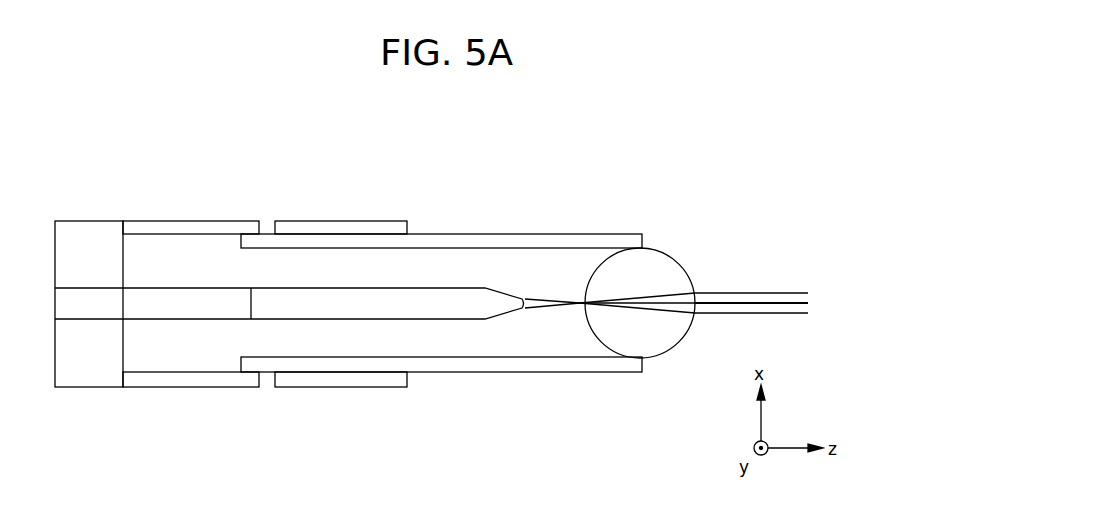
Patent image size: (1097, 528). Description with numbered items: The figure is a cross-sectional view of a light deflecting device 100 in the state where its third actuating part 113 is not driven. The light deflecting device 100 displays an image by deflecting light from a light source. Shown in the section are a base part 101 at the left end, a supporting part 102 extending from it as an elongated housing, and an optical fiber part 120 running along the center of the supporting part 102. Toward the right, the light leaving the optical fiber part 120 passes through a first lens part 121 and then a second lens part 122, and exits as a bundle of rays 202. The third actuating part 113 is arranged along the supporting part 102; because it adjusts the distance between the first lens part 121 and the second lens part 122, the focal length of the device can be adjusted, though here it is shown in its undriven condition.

The light deflecting device 100 is at (728, 172).
The base part 101 is at (82, 382).
The supporting part 102 is at (570, 236).
The third actuating part 113 is at (187, 222).
The optical fiber part 120 is at (412, 295).
The first lens part 121 is at (507, 292).
The second lens part 122 is at (678, 250).
The bundle of rays 202 is at (767, 292).